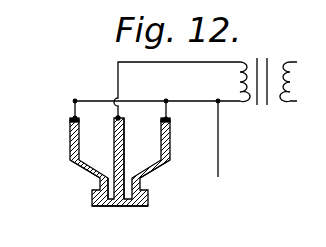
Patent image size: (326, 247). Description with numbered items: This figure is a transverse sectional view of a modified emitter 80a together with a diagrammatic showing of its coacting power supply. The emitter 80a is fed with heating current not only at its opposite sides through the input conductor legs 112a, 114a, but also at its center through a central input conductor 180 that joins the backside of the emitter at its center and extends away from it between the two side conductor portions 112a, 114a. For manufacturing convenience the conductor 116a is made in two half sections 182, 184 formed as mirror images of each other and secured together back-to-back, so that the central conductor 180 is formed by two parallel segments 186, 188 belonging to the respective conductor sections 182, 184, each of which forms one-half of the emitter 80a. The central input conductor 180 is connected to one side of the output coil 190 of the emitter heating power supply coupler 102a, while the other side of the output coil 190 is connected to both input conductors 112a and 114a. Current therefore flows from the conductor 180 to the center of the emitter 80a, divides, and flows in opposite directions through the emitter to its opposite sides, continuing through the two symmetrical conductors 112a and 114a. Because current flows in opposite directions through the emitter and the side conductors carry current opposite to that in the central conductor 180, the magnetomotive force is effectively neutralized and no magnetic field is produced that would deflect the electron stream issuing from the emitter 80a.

The emitter 80a is at (128, 207).
The input conductor leg 112a is at (68, 130).
The input conductor leg 114a is at (170, 142).
The conductor 116a is at (87, 183).
The central input conductor 180 is at (121, 118).
The half section 182 is at (76, 168).
The half section 184 is at (163, 166).
The parallel segment 186 is at (113, 161).
The parallel segment 188 is at (125, 152).
The output coil 190 is at (237, 71).
The emitter heating power supply coupler 102a is at (251, 103).